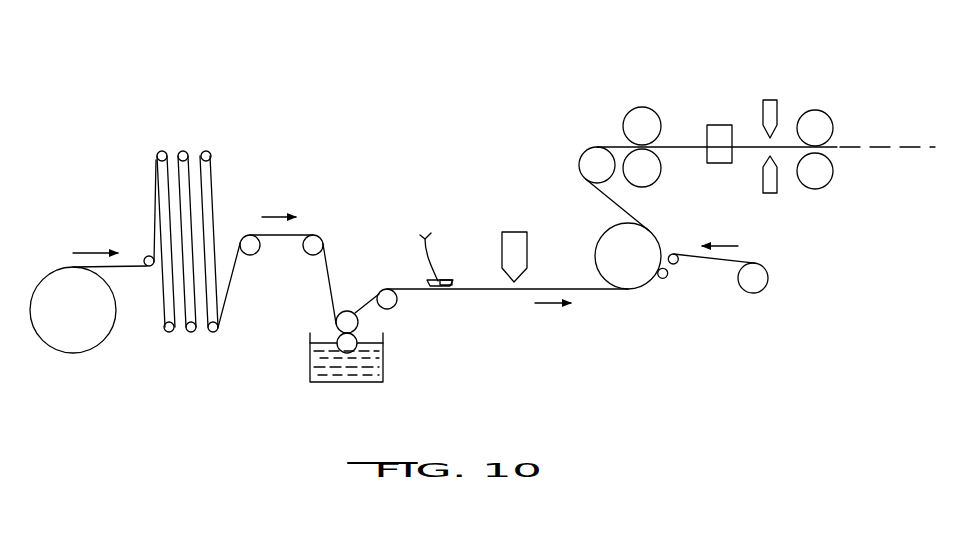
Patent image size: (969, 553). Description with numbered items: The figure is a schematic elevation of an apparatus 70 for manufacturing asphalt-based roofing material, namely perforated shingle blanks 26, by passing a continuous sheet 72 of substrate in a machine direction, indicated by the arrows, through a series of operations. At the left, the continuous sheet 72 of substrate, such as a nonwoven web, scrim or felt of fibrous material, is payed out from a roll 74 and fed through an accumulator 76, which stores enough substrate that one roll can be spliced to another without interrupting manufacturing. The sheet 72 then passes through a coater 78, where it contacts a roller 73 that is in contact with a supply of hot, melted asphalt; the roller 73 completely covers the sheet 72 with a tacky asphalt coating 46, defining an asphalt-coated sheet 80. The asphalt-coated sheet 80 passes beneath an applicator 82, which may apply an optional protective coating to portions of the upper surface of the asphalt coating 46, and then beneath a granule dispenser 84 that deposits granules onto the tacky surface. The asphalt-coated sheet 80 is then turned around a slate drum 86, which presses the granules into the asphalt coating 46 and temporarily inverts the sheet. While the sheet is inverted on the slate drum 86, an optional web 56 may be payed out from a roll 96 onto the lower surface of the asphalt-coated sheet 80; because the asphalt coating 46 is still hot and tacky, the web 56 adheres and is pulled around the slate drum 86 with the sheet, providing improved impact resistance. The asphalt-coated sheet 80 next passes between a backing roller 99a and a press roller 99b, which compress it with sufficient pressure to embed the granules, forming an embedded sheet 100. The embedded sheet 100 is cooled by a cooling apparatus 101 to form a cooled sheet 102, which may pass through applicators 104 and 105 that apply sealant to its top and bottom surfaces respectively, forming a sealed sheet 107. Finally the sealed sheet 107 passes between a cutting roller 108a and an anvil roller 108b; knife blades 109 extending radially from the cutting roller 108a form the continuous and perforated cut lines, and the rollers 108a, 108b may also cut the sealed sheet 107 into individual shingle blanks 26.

The apparatus 70 is at (86, 178).
The continuous sheet 72 is at (120, 267).
The roll 74 is at (70, 327).
The accumulator 76 is at (230, 176).
The coater 78 is at (310, 358).
The asphalt coating 46 is at (370, 360).
The roller 73 is at (356, 333).
The asphalt coated sheet 80 is at (403, 288).
The applicator 82 is at (442, 280).
The granule dispenser 84 is at (510, 231).
The slate drum 86 is at (608, 248).
The web 56 is at (712, 260).
The roll 96 is at (762, 278).
The backing roller 99a is at (662, 167).
The press roller 99b is at (632, 110).
The embedded sheet 100 is at (680, 145).
The cooling apparatus 101 is at (718, 125).
The cooled sheet 102 is at (747, 147).
The applicator 104 is at (763, 107).
The applicator 105 is at (768, 193).
The sealed sheet 107 is at (788, 147).
The cutting roller 108a is at (803, 187).
The anvil roller 108b is at (815, 110).
The knife blades 109 is at (823, 148).
The shingle blank 26 is at (875, 148).